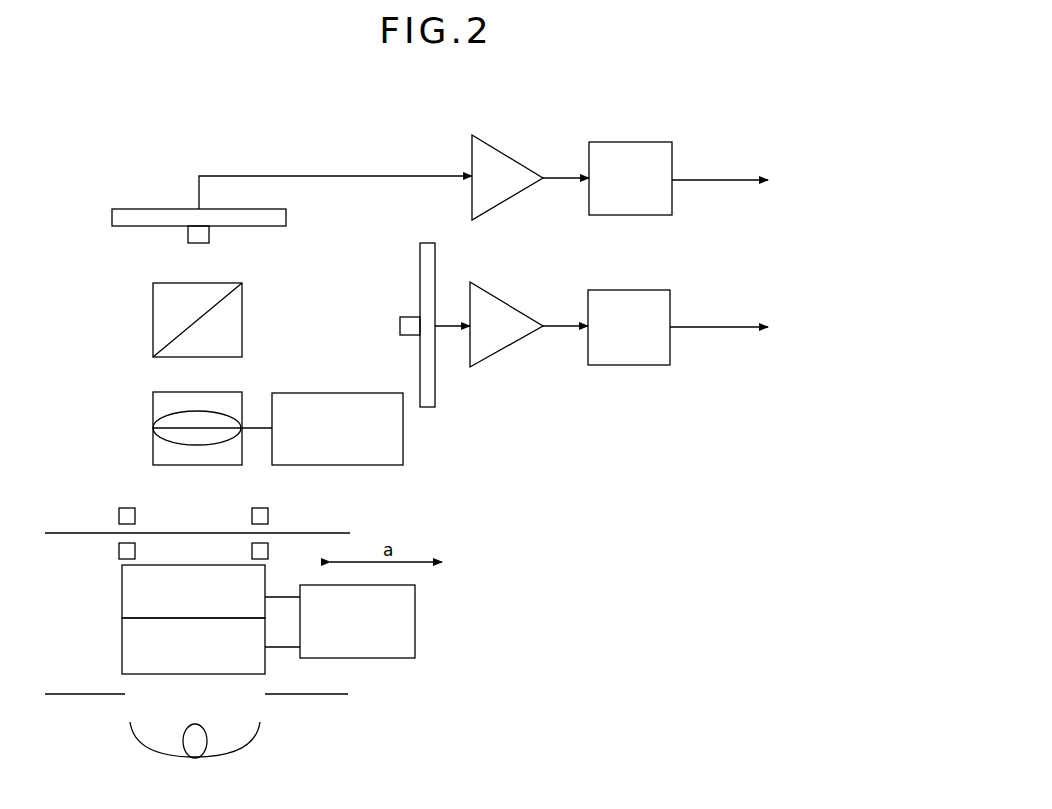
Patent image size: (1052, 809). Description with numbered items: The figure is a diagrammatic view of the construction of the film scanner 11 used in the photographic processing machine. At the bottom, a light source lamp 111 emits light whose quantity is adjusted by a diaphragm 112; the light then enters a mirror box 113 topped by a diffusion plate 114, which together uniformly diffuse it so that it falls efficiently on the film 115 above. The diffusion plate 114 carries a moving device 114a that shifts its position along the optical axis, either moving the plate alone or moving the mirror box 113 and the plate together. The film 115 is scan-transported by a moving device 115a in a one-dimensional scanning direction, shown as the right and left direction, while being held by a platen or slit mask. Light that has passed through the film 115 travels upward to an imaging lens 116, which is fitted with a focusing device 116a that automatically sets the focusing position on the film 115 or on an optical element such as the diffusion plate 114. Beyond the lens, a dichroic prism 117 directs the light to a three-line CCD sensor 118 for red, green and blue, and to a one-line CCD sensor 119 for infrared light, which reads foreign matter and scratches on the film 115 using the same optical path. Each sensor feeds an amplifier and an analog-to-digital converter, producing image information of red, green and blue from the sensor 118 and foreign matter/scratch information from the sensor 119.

The film scanner 11 is at (370, 152).
The light source lamp 111 is at (130, 725).
The diaphragm 112 is at (328, 696).
The mirror box 113 is at (122, 634).
The diffusion plate 114 is at (122, 589).
The moving device 114a is at (415, 633).
The film 115 is at (343, 533).
The moving device 115a is at (111, 504).
The imaging lens 116 is at (153, 410).
The focusing device 116a is at (311, 392).
The dichroic prism 117 is at (153, 305).
The 3-line CCD sensor for R, G and B 118 is at (135, 208).
The 1-line CCD sensor for IR 119 is at (435, 397).